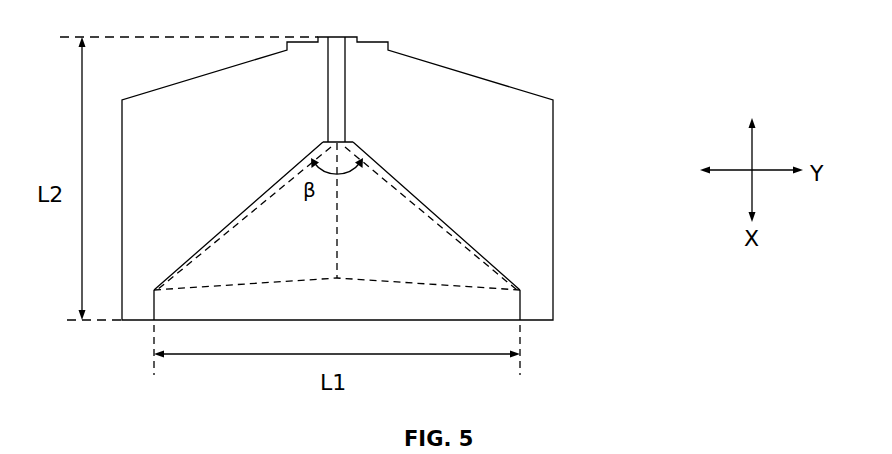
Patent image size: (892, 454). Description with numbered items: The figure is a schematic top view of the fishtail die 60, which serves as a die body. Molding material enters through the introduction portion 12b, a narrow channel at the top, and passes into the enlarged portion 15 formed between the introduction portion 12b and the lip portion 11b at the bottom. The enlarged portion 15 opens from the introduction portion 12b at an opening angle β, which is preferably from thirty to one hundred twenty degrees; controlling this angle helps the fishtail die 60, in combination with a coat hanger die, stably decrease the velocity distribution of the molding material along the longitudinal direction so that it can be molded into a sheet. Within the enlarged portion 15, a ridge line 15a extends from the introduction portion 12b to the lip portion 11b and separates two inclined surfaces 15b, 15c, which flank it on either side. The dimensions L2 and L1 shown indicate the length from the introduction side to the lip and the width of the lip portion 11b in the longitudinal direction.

The fishtail die 60 is at (559, 75).
The introduction portion 12b is at (340, 80).
The enlarged portion 15 is at (614, 122).
The ridge line 15a is at (337, 233).
The inclined surface 15b is at (307, 216).
The inclined surface 15c is at (395, 265).
The lip portion 11b is at (502, 305).